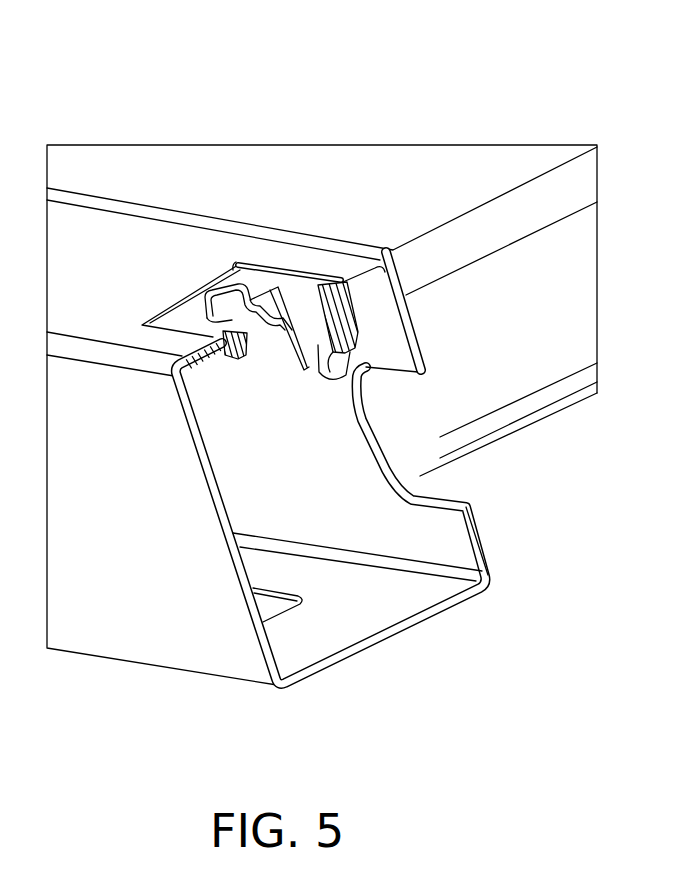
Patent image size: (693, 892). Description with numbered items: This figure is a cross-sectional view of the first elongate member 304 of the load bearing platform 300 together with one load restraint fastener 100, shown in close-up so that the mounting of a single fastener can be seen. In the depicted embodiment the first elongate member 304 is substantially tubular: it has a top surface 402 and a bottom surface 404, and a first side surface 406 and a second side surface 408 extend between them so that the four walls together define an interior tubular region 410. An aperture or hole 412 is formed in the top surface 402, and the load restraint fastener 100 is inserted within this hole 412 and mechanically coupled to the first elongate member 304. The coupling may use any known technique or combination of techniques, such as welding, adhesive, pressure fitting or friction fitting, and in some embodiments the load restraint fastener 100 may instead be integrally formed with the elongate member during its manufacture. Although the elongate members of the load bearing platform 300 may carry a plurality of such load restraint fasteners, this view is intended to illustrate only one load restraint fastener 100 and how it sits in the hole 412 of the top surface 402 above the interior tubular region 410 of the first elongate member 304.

The load bearing platform 300 is at (177, 116).
The load restraint fastener 100 is at (172, 303).
The first elongate member 304 is at (115, 660).
The top surface 402 is at (340, 264).
The bottom surface 404 is at (372, 647).
The first side surface 406 is at (243, 622).
The second side surface 408 is at (486, 552).
The interior tubular region 410 is at (308, 636).
The hole 412 is at (238, 262).